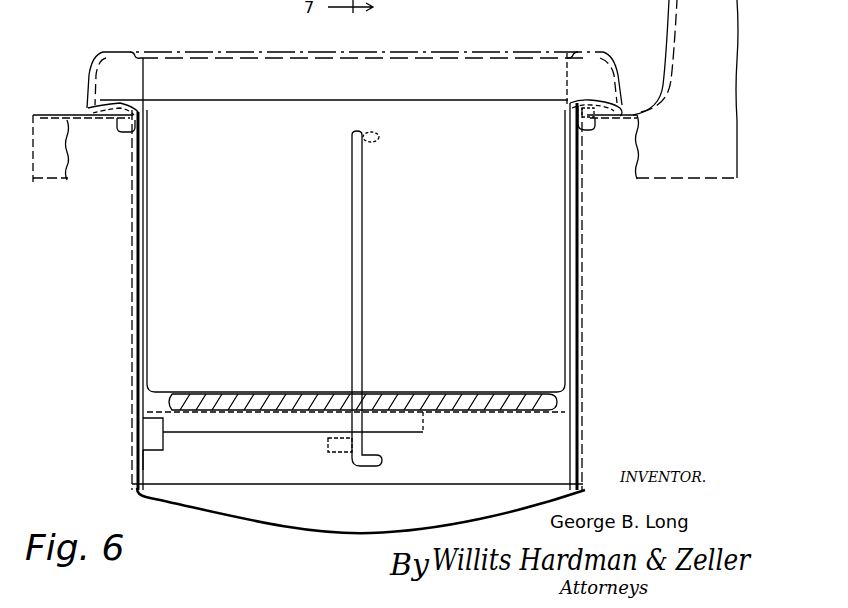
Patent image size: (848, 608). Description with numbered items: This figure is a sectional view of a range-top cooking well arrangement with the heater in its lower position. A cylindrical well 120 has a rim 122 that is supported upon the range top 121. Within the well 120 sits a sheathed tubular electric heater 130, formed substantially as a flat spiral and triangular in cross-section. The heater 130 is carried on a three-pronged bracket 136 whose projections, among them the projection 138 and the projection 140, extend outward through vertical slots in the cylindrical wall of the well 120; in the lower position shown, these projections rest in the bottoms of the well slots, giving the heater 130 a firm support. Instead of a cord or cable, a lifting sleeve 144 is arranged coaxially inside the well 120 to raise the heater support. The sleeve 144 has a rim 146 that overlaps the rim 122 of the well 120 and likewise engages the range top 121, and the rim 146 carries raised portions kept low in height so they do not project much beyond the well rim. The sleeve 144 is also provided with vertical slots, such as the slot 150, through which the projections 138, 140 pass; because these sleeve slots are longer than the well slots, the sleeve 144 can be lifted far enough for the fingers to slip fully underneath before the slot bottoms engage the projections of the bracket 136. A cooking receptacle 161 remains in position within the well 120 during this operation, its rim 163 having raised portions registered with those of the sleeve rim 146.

The well 120 is at (580, 293).
The range top 121 is at (62, 115).
The rim 122 is at (590, 128).
The electric heater 130 is at (502, 413).
The three-pronged bracket 136 is at (400, 424).
The projection 138 is at (127, 447).
The projection 140 is at (328, 445).
The lifting sleeve 144 is at (268, 476).
The rim 146 is at (600, 106).
The vertical slot 150 is at (147, 465).
The cooking receptacle 161 is at (483, 53).
The rim 163 is at (603, 52).